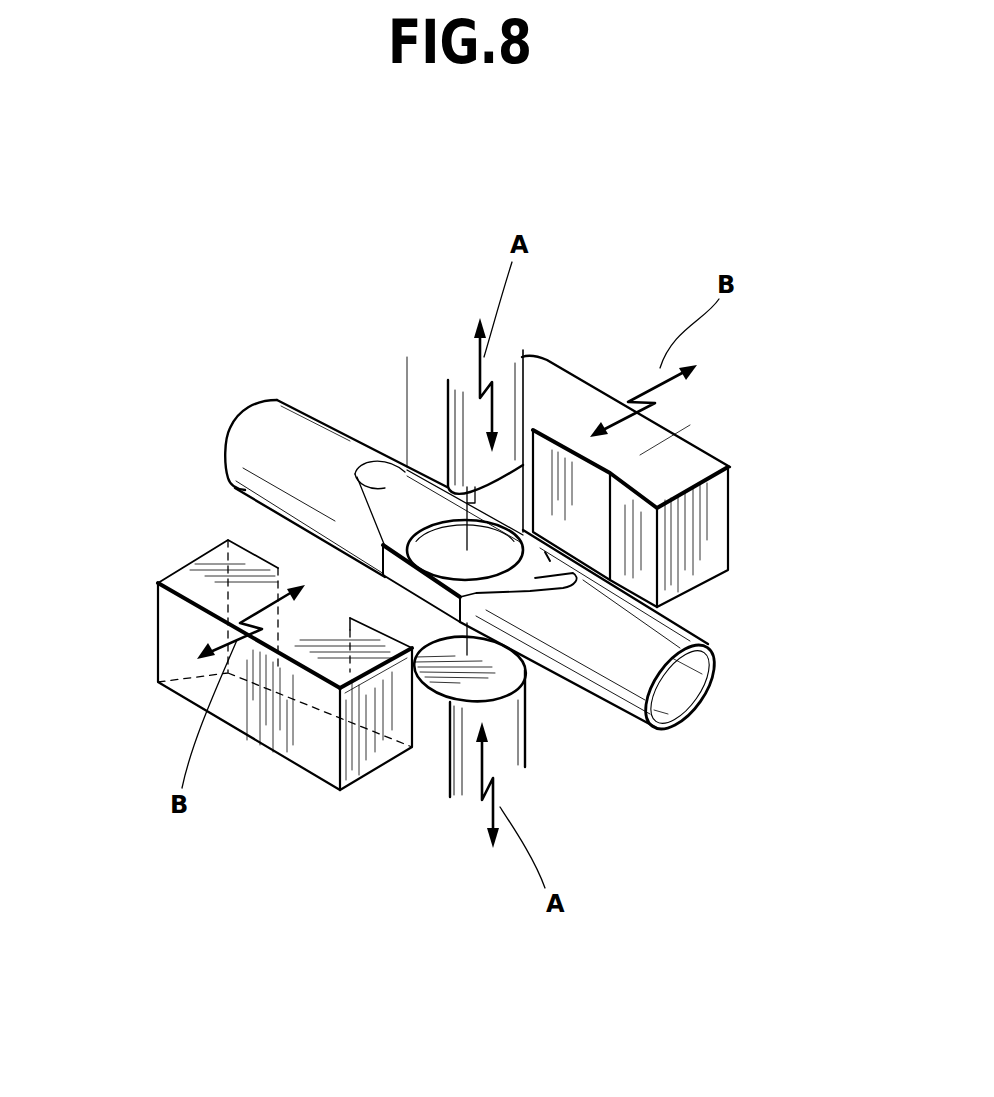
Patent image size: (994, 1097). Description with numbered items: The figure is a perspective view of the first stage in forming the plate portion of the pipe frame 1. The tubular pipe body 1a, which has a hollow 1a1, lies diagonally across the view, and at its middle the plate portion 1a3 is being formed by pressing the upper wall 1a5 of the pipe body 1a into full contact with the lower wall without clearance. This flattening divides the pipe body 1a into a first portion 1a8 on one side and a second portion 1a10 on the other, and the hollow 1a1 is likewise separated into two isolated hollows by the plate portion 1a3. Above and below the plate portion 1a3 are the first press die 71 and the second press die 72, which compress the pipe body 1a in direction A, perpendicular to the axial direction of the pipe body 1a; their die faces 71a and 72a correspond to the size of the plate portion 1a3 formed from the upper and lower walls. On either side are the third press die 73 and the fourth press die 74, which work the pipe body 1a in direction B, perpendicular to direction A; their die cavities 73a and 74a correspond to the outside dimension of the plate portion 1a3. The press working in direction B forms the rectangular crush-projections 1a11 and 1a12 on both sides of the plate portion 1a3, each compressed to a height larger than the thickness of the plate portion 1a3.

The pipe frame 1 is at (295, 390).
The pipe body 1a is at (247, 440).
The hollow 1a1 is at (675, 697).
The plate portion 1a3 is at (440, 540).
The upper wall 1a5 is at (448, 537).
The first portion 1a8 is at (280, 402).
The second portion 1a10 is at (572, 582).
The crush-projection 1a11 is at (383, 545).
The crush-projection 1a12 is at (512, 553).
The first press die 71 is at (523, 387).
The die face 71a is at (472, 518).
The second press die 72 is at (525, 745).
The die face 72a is at (493, 668).
The third press die 73 is at (378, 770).
The die cavity 73a is at (347, 592).
The fourth press die 74 is at (700, 588).
The die cavity 74a is at (578, 473).